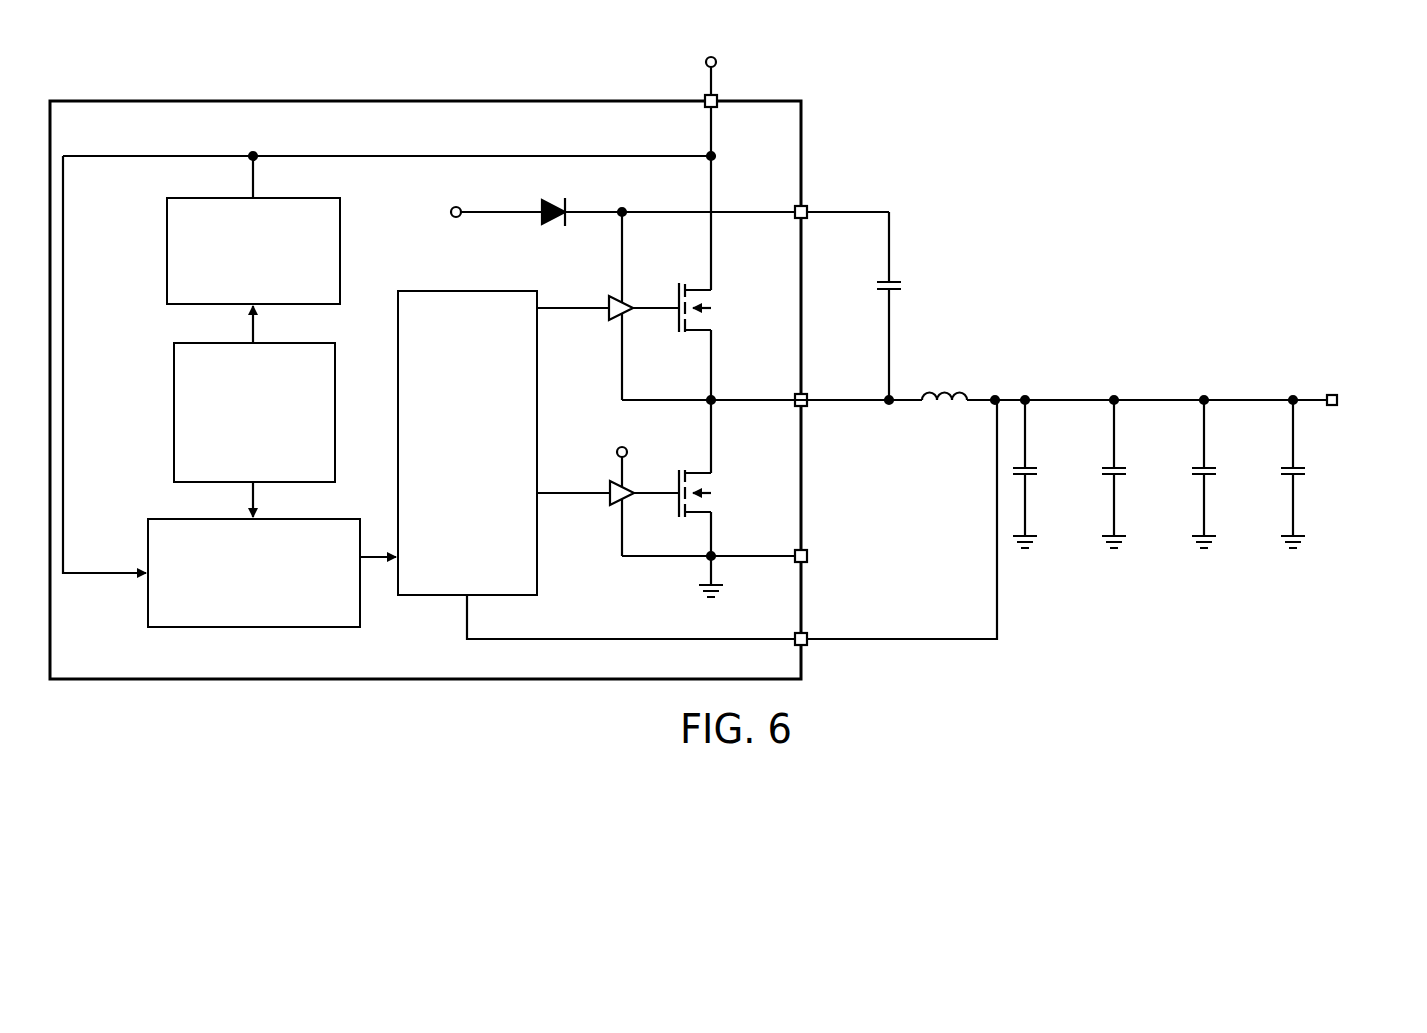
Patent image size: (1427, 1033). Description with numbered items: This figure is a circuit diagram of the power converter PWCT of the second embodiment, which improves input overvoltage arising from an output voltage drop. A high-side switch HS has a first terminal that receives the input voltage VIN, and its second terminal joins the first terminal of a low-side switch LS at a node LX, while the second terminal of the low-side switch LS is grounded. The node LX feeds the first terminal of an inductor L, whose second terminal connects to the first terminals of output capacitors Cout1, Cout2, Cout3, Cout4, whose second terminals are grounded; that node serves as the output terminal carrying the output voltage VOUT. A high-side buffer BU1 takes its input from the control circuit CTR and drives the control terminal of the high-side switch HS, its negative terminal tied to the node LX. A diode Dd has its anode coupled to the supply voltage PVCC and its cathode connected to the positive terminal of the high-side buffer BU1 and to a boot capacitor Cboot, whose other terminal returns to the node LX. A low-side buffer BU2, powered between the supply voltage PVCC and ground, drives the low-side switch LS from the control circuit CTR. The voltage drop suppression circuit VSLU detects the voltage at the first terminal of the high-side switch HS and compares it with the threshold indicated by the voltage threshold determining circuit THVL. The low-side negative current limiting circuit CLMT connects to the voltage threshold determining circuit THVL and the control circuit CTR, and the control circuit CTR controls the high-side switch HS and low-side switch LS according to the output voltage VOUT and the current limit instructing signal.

The power converter PWCT is at (801, 137).
The voltage drop suppression circuit VSLU is at (167, 250).
The voltage threshold determining circuit THVL is at (174, 409).
The low-side negative current limiting circuit CLMT is at (148, 597).
The control circuit CTR is at (470, 291).
The supply voltage PVCC is at (518, 377).
The diode Dd is at (713, 282).
The high-side buffer BU1 is at (610, 305).
The low-side buffer BU2 is at (608, 500).
The high-side switch HS is at (715, 250).
The low-side switch LS is at (711, 498).
The input voltage VIN is at (712, 67).
The node LX is at (772, 387).
The boot capacitor Cboot is at (918, 306).
The inductor L is at (1124, 384).
The output capacitor Cout1 is at (1053, 472).
The output capacitor Cout2 is at (1143, 472).
The output capacitor Cout3 is at (1233, 472).
The output capacitor Cout4 is at (1322, 472).
The output voltage VOUT is at (1374, 402).